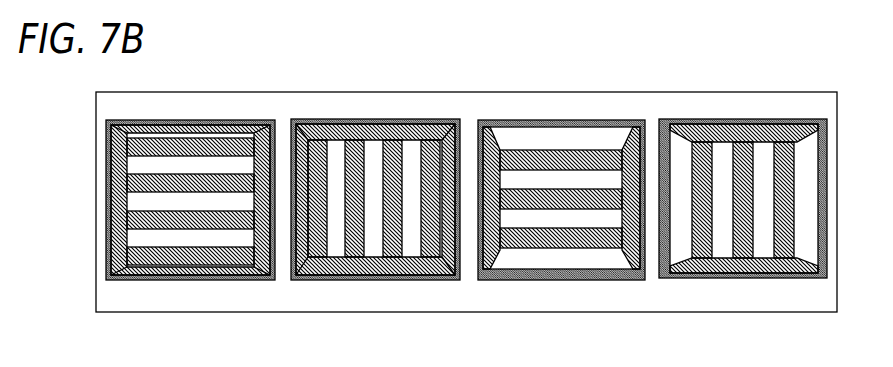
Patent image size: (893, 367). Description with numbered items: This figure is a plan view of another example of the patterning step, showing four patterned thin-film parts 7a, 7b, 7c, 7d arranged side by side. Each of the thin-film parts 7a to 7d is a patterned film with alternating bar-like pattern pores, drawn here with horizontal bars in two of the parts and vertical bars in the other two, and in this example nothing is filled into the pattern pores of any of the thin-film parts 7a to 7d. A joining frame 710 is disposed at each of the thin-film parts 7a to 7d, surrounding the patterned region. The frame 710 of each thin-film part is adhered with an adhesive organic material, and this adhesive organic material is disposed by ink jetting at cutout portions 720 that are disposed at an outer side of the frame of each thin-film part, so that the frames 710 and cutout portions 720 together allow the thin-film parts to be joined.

The joining frame 710 is at (757, 263).
The cutout portion 720 is at (743, 236).
The thin-film part 7a is at (118, 87).
The thin-film part 7b is at (302, 87).
The thin-film part 7c is at (488, 87).
The thin-film part 7d is at (677, 87).